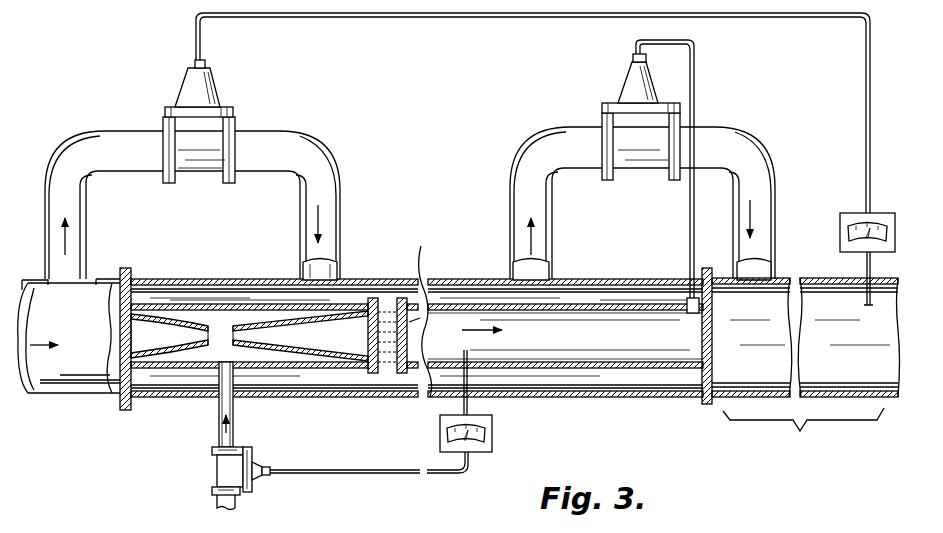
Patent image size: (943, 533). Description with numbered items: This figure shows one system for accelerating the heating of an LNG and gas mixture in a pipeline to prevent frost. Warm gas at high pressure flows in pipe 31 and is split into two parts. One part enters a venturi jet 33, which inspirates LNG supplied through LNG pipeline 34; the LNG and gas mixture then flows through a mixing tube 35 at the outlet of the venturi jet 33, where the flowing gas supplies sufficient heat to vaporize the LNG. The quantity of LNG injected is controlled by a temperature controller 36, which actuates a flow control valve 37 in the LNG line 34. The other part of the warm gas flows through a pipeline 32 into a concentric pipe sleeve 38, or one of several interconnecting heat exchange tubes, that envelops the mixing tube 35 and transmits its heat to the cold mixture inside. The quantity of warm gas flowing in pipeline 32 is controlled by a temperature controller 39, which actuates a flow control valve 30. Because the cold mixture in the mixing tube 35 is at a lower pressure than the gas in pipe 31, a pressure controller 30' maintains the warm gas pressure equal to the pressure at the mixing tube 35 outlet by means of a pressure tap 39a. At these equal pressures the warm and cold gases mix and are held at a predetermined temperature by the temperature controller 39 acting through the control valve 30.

The flow control valve 30 is at (499, 113).
The pressure controller 30' is at (626, 114).
The pipe 31 is at (50, 393).
The pipeline 32 is at (82, 246).
The venturi jet 33 is at (215, 327).
The LNG pipeline 34 is at (219, 436).
The mixing tube 35 is at (450, 320).
The temperature controller 36 is at (440, 437).
The flow control valve 37 is at (228, 478).
The pipe sleeve 38 is at (403, 278).
The temperature controller 39 is at (851, 213).
The pressure tap 39a is at (688, 313).